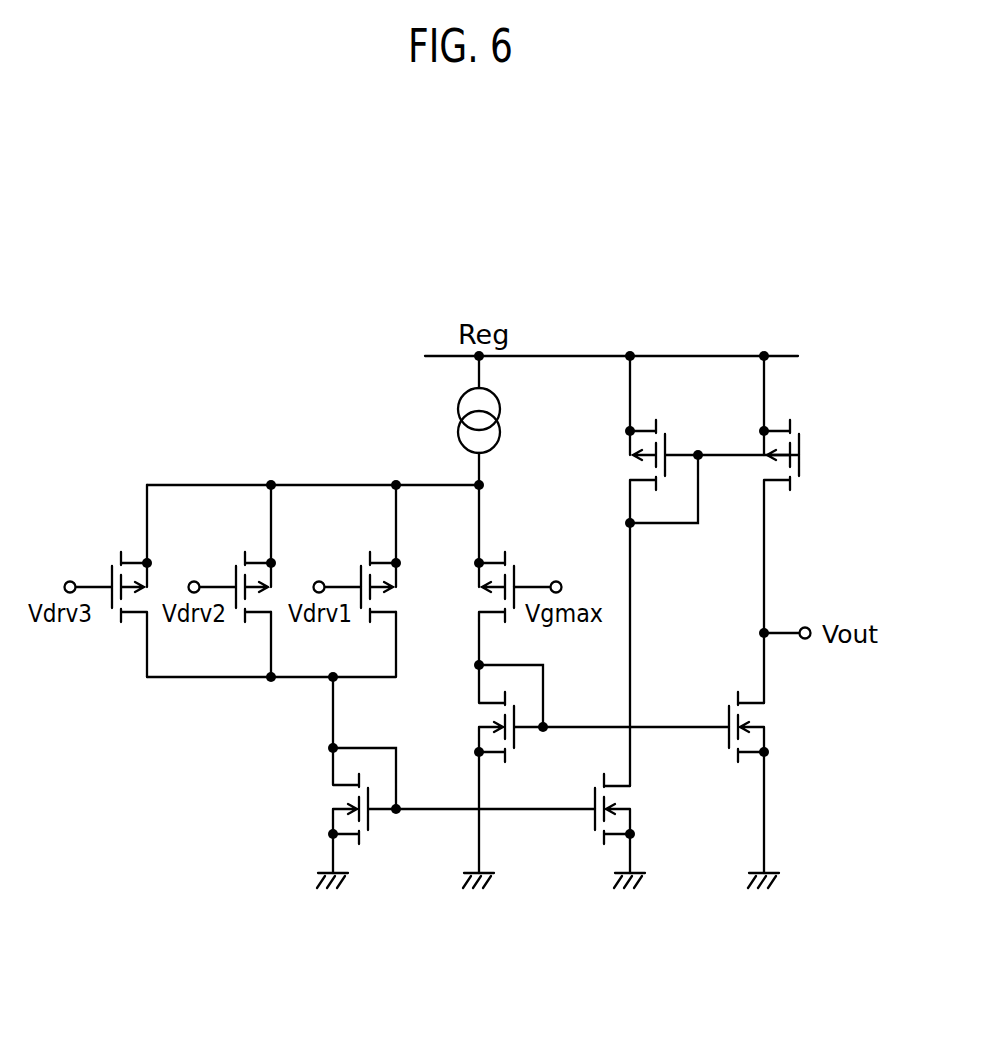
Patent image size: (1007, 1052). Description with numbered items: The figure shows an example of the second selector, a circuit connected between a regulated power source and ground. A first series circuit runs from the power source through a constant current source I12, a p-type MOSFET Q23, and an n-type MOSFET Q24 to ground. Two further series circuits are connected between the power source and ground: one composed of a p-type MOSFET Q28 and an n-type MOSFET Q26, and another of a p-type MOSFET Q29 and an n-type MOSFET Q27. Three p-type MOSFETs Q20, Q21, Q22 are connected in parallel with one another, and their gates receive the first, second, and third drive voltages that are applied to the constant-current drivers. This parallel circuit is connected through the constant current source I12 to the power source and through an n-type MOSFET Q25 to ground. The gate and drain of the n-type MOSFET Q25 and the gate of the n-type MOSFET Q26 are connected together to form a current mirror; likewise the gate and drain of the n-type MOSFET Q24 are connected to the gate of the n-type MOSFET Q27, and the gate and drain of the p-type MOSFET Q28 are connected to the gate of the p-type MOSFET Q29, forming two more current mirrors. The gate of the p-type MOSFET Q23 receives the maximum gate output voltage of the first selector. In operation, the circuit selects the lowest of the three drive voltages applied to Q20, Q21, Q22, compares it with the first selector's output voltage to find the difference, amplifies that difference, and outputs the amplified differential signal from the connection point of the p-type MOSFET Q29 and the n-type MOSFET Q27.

The constant current source I12 is at (506, 420).
The p-type MOSFET Q20 is at (351, 577).
The p-type MOSFET Q21 is at (226, 577).
The p-type MOSFET Q22 is at (102, 581).
The p-type MOSFET Q23 is at (525, 606).
The n-type MOSFET Q24 is at (572, 769).
The n-type MOSFET Q25 is at (433, 775).
The n-type MOSFET Q26 is at (644, 822).
The n-type MOSFET Q27 is at (779, 780).
The p-type MOSFET Q28 is at (682, 571).
The p-type MOSFET Q29 is at (798, 529).